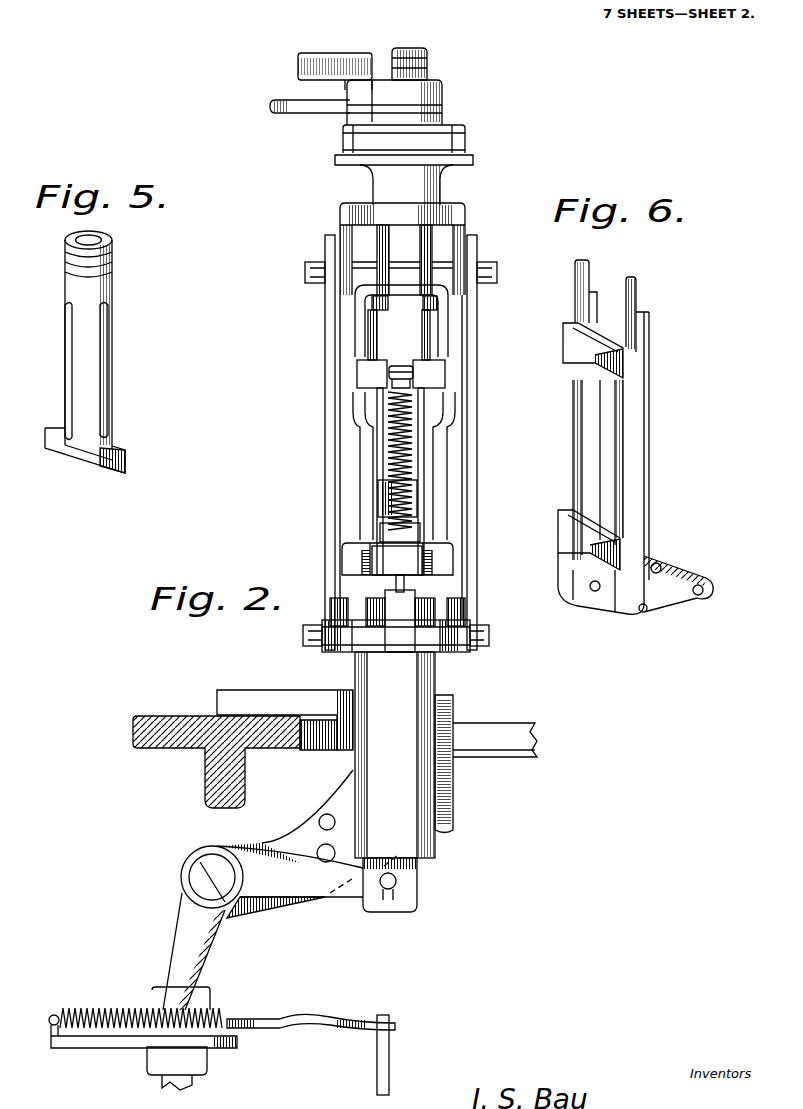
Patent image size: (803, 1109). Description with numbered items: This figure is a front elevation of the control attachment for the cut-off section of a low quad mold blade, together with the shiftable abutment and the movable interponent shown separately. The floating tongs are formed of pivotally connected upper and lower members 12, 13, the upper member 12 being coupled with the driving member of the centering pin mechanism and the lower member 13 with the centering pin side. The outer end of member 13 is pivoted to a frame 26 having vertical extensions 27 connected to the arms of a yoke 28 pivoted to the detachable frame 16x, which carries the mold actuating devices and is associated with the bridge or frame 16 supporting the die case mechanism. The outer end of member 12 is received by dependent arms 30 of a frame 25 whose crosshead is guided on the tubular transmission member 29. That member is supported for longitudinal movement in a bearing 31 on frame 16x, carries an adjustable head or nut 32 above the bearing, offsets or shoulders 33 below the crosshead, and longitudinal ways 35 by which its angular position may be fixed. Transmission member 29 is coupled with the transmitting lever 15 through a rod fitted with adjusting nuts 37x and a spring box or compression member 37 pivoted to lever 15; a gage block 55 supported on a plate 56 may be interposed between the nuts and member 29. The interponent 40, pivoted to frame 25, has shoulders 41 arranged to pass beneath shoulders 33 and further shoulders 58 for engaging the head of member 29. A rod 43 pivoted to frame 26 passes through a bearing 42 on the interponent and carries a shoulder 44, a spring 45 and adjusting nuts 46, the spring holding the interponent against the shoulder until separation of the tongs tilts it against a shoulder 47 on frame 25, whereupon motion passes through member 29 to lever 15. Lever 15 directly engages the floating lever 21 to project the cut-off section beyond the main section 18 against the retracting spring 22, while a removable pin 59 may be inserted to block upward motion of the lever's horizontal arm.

In FIG. 2, the upper member of floating tongs 12 is at (350, 552).
In FIG. 2, the lower member of floating tongs 13 is at (404, 585).
In FIG. 2, the transmitting lever 15 is at (198, 971).
In FIG. 2, the bridge or frame 16 is at (182, 740).
In FIG. 2, the detachable frame 16x is at (290, 912).
In FIG. 2, the main section of mold blade 18 is at (389, 1058).
In FIG. 2, the floating lever 21 is at (305, 1017).
In FIG. 2, the retracting spring 22 is at (90, 1012).
In FIG. 2, the frame 25 is at (410, 290).
In FIG. 2, the frame 26 is at (440, 650).
In FIG. 2, the vertical extensions 27 is at (472, 496).
In FIG. 2, the yoke 28 is at (462, 222).
In FIG. 2, the transmission member 29 is at (402, 260).
In FIG. 5, the transmission member 29 is at (88, 393).
In FIG. 2, the dependent arms 30 is at (360, 450).
In FIG. 2, the bearing 31 is at (438, 188).
In FIG. 2, the adjustable head or nut 32 is at (440, 100).
In FIG. 2, the offsets or shoulders 33 is at (372, 303).
In FIG. 5, the offsets or shoulders 33 is at (50, 448).
In FIG. 5, the longitudinal ways 35 is at (104, 335).
In FIG. 2, the spring box or compression member 37 is at (395, 755).
In FIG. 2, the adjusting nuts 37x is at (428, 66).
In FIG. 2, the interponent 40 is at (377, 400).
In FIG. 6, the interponent 40 is at (637, 476).
In FIG. 6, the shoulders 41 is at (581, 260).
In FIG. 2, the bearing 42 is at (397, 560).
In FIG. 2, the rod 43 is at (385, 482).
In FIG. 2, the shoulder 44 is at (396, 583).
In FIG. 2, the spring 45 is at (385, 528).
In FIG. 2, the adjusting nuts 46 is at (389, 375).
In FIG. 2, the shoulder 47 is at (357, 365).
In FIG. 2, the gage block 55 is at (330, 62).
In FIG. 2, the plate 56 is at (305, 110).
In FIG. 6, the shoulders 58 is at (594, 292).
In FIG. 2, the removable pin 59 is at (320, 818).